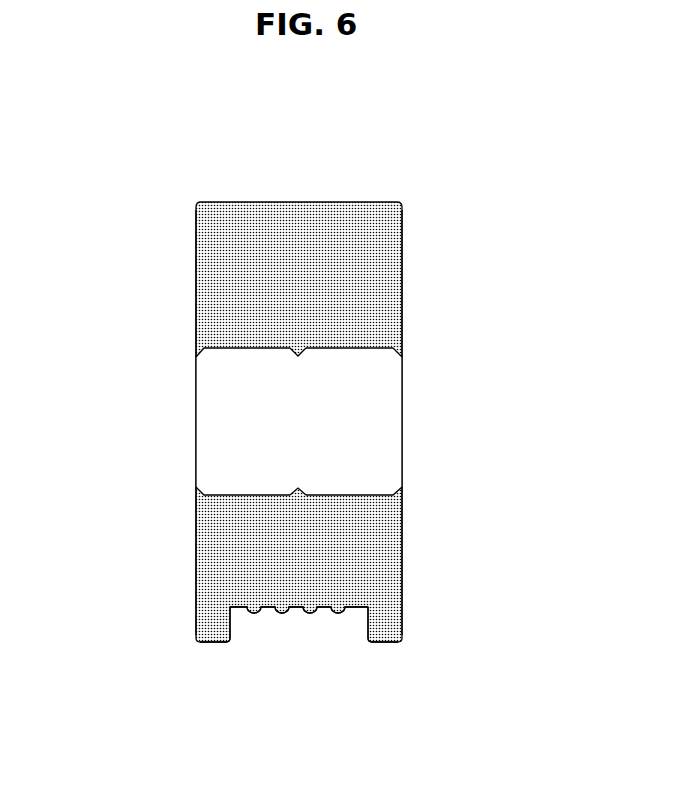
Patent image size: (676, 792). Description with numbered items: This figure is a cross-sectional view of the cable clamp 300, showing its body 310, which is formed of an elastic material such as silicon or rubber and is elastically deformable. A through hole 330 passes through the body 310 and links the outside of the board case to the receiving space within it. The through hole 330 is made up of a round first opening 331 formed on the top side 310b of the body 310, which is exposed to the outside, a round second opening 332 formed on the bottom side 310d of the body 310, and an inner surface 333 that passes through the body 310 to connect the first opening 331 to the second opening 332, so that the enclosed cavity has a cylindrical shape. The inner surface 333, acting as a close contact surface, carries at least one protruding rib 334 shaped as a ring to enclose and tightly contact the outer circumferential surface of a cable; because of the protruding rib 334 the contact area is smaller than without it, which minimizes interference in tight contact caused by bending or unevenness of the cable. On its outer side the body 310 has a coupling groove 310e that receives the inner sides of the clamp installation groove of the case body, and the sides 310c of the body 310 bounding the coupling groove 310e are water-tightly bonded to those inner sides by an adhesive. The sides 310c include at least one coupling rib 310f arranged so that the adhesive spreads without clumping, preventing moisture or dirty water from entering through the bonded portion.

The cable clamp 300 is at (256, 181).
The body 310 is at (378, 201).
The top side 310b is at (196, 262).
The sides of the body 310c is at (302, 608).
The bottom side 310d is at (402, 265).
The coupling groove 310e is at (230, 622).
The coupling rib 310f is at (340, 614).
The through hole 330 is at (309, 429).
The first opening 331 is at (199, 355).
The second opening 332 is at (397, 355).
The inner surface 333 is at (350, 349).
The protruding rib 334 is at (400, 490).